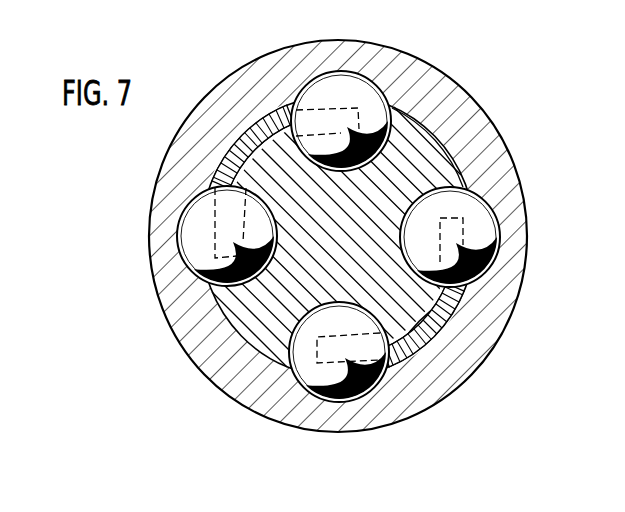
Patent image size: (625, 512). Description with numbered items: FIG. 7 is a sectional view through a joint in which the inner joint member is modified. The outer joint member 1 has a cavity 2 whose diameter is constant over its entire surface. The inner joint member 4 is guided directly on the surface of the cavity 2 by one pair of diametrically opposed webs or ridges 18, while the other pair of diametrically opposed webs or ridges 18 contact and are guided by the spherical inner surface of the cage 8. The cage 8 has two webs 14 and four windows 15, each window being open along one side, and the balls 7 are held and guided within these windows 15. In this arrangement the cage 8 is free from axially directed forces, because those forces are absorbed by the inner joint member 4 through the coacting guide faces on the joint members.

The outer joint member 1 is at (437, 90).
The cavity 2 is at (463, 292).
The inner joint member 4 is at (460, 83).
The balls 7 is at (479, 218).
The cage 8 is at (438, 332).
The webs 14 is at (430, 348).
The windows 15 is at (273, 118).
The webs or ridges 18 is at (398, 138).